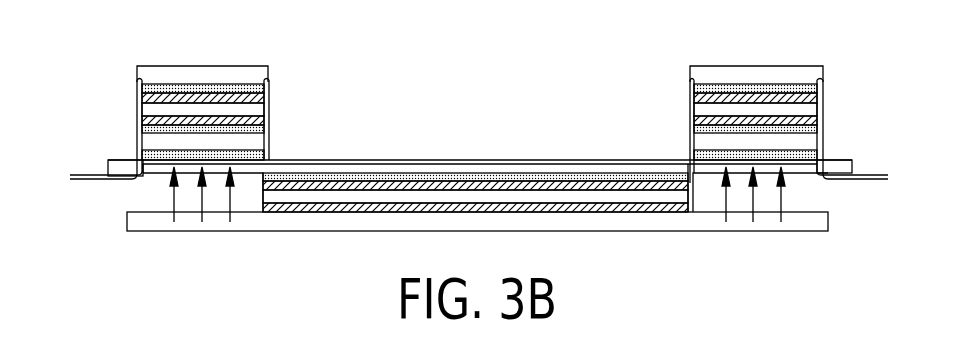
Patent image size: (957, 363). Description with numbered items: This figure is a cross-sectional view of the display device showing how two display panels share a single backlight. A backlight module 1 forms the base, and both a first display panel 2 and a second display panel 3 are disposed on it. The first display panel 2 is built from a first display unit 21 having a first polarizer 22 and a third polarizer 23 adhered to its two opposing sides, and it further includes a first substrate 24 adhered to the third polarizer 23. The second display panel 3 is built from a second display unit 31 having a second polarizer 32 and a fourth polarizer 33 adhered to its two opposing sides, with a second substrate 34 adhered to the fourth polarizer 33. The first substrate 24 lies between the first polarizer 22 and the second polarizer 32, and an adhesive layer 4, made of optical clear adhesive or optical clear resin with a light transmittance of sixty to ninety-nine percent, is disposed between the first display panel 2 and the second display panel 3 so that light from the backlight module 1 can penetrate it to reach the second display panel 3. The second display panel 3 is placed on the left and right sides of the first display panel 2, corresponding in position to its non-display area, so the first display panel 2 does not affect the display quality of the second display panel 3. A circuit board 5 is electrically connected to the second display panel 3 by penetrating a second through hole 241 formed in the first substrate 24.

The backlight module 1 is at (137, 219).
The first display panel 2 is at (491, 260).
The first display unit 21 is at (633, 198).
The first polarizer 22 is at (475, 247).
The third polarizer 23 is at (667, 190).
The first substrate 24 is at (688, 180).
The second through hole 241 is at (143, 180).
The second display panel 3 is at (154, 108).
The second display unit 31 is at (150, 110).
The second polarizer 32 is at (172, 140).
The fourth polarizer 33 is at (147, 99).
The second substrate 34 is at (150, 73).
The adhesive layer 4 is at (266, 154).
The circuit board 5 is at (70, 176).